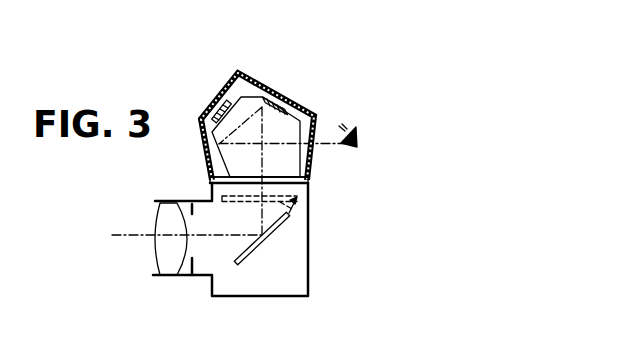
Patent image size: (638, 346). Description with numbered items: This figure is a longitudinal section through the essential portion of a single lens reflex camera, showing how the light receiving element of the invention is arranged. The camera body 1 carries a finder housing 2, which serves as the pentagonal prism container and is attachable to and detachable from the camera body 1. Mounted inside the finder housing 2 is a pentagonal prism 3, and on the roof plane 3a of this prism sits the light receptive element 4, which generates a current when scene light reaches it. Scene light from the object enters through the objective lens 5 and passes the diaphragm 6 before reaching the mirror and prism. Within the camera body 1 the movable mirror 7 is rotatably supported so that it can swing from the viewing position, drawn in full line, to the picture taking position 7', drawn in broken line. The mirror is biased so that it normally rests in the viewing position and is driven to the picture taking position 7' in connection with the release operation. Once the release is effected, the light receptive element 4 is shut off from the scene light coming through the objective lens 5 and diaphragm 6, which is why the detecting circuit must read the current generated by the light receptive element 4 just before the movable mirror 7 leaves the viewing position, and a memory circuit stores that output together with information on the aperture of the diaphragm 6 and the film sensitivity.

The camera body 1 is at (307, 270).
The finder housing 2 is at (313, 147).
The pentagonal prism 3 is at (310, 181).
The roof plane 3a is at (247, 181).
The light receptive element 4 is at (236, 99).
The objective lens 5 is at (172, 264).
The diaphragm 6 is at (191, 264).
The movable mirror 7 is at (265, 231).
The picture taking position 7' is at (276, 212).